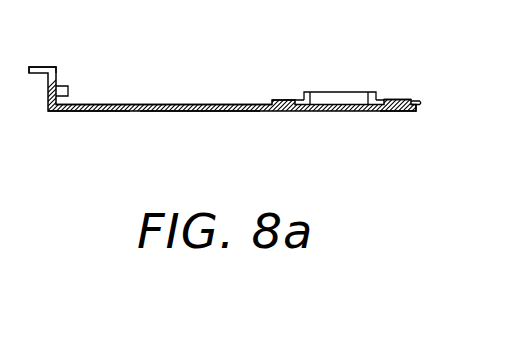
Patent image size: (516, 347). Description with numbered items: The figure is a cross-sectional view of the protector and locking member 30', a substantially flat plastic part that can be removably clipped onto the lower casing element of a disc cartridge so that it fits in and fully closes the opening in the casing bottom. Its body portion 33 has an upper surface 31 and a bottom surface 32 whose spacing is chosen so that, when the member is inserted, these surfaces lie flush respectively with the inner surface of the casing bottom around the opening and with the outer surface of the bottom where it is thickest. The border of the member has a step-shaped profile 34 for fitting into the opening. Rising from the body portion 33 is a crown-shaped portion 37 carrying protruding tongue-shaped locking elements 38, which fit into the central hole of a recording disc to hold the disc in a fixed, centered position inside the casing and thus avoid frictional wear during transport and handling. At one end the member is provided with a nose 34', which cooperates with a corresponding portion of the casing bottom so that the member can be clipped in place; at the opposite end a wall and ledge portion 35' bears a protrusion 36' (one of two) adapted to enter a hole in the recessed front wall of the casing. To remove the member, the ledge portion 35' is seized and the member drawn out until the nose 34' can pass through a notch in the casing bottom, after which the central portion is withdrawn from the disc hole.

The protector and locking member 30' is at (245, 78).
The upper surface 31 is at (200, 105).
The bottom surface 32 is at (92, 112).
The body portion 33 is at (168, 112).
The step-shaped profile 34 is at (402, 137).
The nose 34' is at (403, 72).
The wall and ledge portion 35' is at (36, 42).
The protrusion 36' is at (79, 61).
The crown-shaped portion 37 is at (338, 96).
The locking elements 38 is at (305, 99).